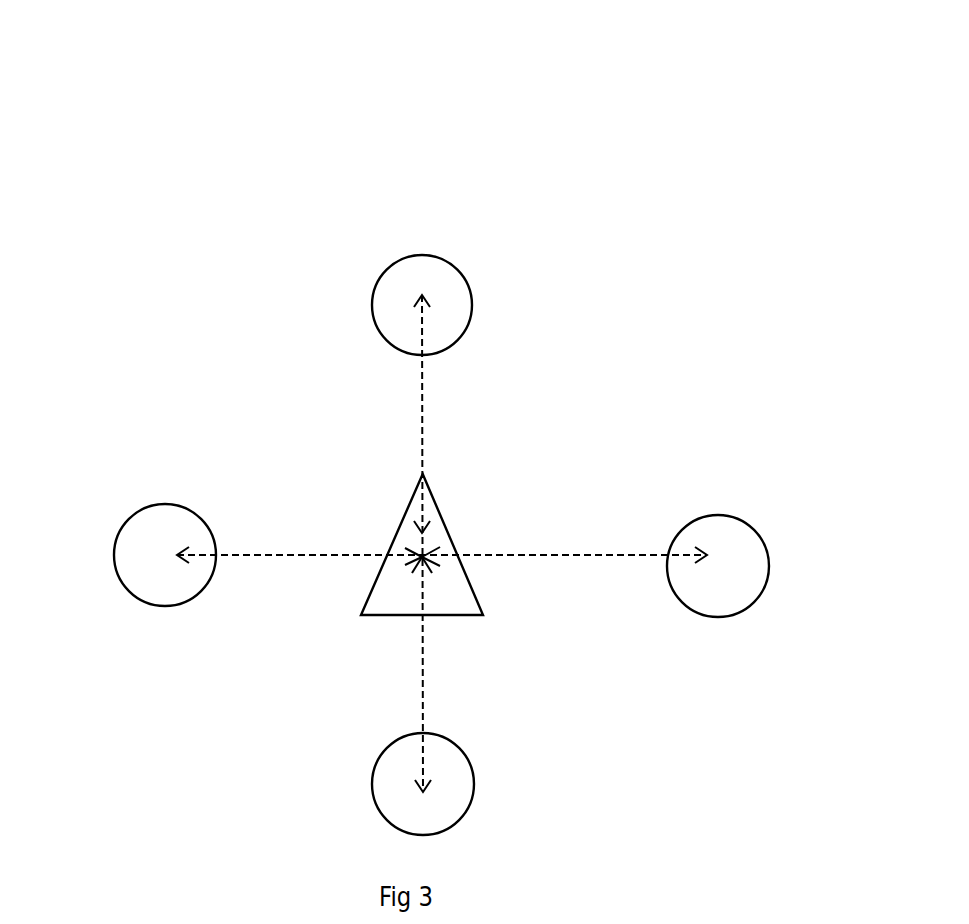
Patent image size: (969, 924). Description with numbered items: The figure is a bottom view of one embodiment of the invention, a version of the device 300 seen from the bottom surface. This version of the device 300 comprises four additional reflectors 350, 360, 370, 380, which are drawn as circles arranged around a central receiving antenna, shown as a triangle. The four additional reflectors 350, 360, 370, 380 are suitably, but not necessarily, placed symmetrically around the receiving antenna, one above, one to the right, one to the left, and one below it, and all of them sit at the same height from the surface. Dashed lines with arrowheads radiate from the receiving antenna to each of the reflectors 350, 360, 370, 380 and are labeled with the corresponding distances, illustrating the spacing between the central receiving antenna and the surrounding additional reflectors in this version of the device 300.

The device 300 is at (268, 109).
The additional reflector 350 is at (515, 271).
The additional reflector 360 is at (778, 487).
The additional reflector 370 is at (106, 484).
The additional reflector 380 is at (495, 750).